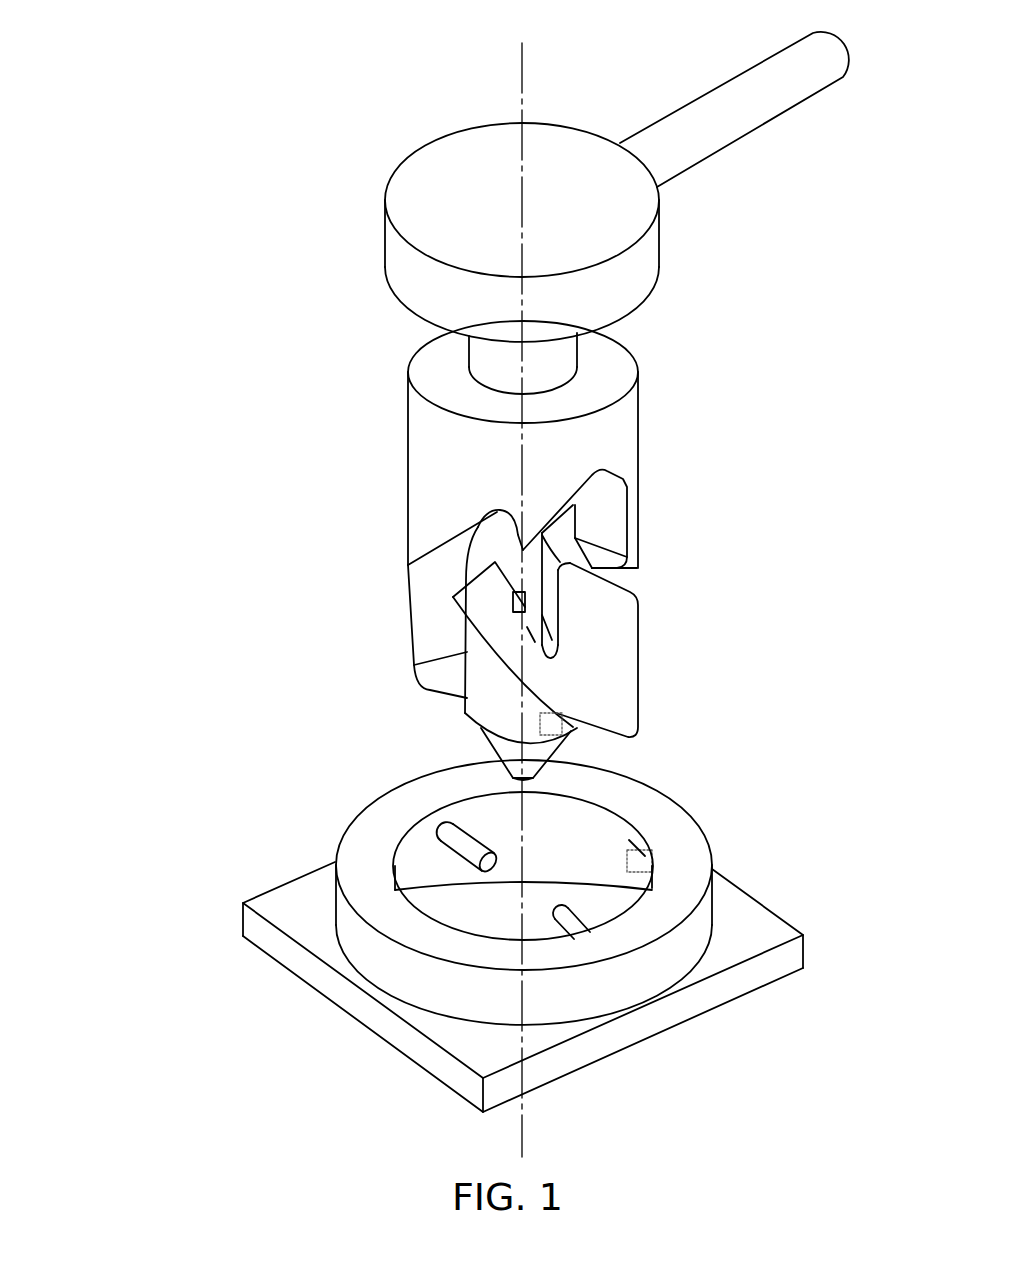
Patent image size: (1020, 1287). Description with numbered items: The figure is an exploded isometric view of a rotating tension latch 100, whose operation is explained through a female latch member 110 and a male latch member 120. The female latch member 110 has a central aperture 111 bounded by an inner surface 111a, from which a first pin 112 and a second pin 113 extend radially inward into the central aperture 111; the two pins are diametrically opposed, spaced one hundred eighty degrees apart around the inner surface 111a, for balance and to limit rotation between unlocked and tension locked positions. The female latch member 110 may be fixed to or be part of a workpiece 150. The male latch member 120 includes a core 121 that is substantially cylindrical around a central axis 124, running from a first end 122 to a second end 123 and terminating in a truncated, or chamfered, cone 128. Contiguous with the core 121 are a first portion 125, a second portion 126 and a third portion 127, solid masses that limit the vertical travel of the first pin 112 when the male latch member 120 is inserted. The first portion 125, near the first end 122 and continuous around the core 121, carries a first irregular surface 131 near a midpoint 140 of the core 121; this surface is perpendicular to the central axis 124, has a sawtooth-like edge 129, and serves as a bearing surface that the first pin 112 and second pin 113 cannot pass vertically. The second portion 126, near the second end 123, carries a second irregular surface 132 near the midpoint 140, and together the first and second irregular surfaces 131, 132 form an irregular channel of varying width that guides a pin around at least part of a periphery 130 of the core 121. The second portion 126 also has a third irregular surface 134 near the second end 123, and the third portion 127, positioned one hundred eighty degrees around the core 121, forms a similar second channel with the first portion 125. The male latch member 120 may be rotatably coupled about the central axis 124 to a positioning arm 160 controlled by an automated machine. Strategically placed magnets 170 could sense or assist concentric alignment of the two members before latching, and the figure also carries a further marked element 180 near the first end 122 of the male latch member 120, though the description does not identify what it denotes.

The rotating tension latch 100 is at (277, 33).
The female latch member 110 is at (745, 872).
The central aperture 111 is at (706, 819).
The inner surface 111a is at (613, 843).
The first pin 112 is at (463, 857).
The second pin 113 is at (568, 922).
The male latch member 120 is at (700, 429).
The core 121 is at (467, 652).
The first end 122 is at (480, 258).
The second end 123 is at (460, 756).
The central axis 124 is at (522, 92).
The first portion 125 is at (598, 428).
The second portion 126 is at (615, 668).
The third portion 127 is at (455, 655).
The cone 128 is at (482, 743).
The edge 129 is at (590, 498).
The periphery 130 is at (480, 740).
The first irregular surface 131 is at (383, 546).
The second irregular surface 132 is at (525, 612).
The third irregular surface 134 is at (605, 738).
The midpoint 140 is at (520, 573).
The workpiece 150 is at (535, 1040).
The positioning arm 160 is at (660, 147).
The magnets 170 is at (562, 723).
The sensor 180 is at (562, 367).